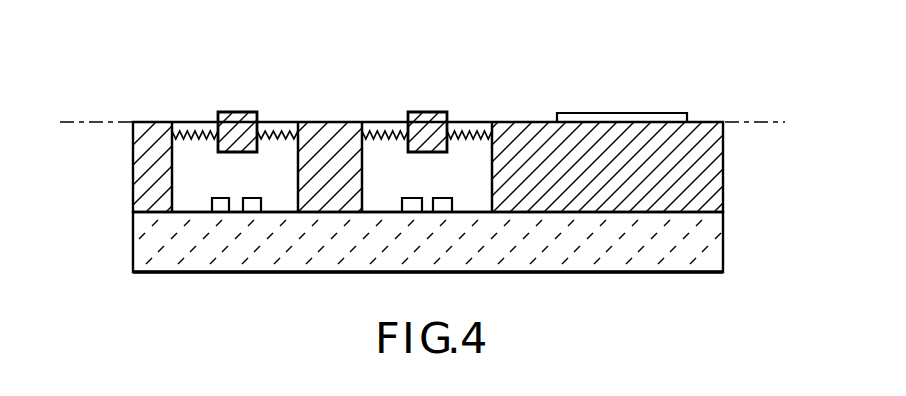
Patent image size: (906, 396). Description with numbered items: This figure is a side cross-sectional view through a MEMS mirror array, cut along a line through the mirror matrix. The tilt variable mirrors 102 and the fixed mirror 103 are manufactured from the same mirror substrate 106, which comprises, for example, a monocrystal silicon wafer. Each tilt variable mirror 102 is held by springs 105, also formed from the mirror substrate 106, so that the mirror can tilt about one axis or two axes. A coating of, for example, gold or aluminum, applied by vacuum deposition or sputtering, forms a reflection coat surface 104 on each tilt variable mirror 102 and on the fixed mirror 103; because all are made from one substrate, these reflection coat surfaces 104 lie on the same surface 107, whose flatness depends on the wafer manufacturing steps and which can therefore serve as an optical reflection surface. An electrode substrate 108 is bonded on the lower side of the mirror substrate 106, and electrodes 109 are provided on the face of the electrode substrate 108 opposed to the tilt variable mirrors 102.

The tilt variable mirror 102 is at (231, 112).
The fixed mirror 103 is at (658, 112).
The reflection coat surface 104 is at (242, 112).
The spring 105 is at (187, 133).
The mirror substrate 106 is at (705, 122).
The surface 107 is at (72, 122).
The electrode substrate 108 is at (620, 252).
The electrode 109 is at (223, 204).